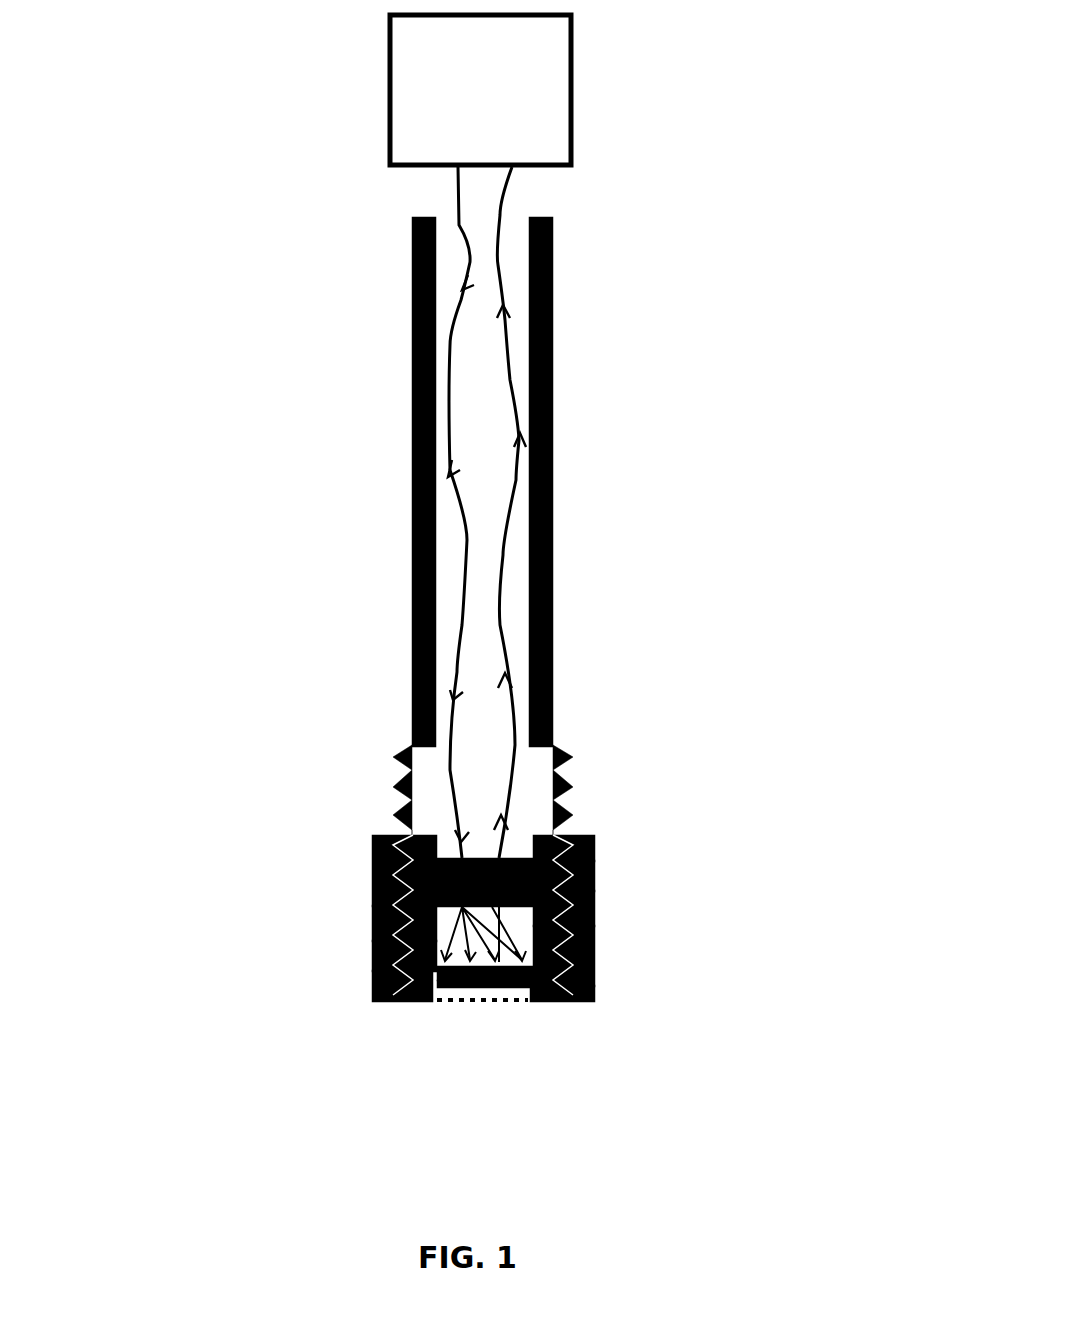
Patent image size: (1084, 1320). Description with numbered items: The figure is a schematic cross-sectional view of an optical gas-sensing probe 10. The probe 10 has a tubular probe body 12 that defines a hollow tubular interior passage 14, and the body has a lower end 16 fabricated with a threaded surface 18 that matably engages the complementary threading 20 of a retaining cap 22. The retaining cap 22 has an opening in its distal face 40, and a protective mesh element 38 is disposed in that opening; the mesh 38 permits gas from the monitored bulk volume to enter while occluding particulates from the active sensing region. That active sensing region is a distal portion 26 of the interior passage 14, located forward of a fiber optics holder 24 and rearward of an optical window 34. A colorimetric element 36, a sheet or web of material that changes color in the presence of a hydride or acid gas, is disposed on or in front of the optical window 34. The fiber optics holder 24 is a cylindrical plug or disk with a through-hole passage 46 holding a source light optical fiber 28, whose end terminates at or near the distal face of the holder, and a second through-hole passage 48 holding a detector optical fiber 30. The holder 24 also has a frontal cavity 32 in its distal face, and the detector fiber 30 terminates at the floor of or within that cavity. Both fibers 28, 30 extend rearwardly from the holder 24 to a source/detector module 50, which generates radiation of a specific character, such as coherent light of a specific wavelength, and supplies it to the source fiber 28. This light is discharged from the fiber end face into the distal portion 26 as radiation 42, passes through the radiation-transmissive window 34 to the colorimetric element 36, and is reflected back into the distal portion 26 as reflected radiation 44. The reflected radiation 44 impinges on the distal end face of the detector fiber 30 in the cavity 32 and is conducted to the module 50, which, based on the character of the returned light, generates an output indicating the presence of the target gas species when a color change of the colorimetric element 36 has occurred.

The optical gas-sensing probe 10 is at (633, 280).
The tubular probe body 12 is at (553, 477).
The hollow tubular interior passage 14 is at (448, 267).
The lower end 16 is at (590, 760).
The threaded surface 18 is at (407, 763).
The complementary threading 20 is at (593, 892).
The retaining cap 22 is at (437, 915).
The fiber optics holder 24 is at (572, 833).
The distal portion 26 is at (373, 957).
The source light optical fiber 28 is at (462, 628).
The detector optical fiber 30 is at (503, 575).
The frontal cavity 32 is at (593, 873).
The optical window 34 is at (590, 1002).
The colorimetric element 36 is at (466, 984).
The protective mesh element 38 is at (493, 1002).
The distal face 40 is at (557, 1002).
The radiation 42 is at (373, 977).
The reflected radiation 44 is at (593, 933).
The through-hole passage 46 is at (373, 870).
The second through-hole passage 48 is at (593, 840).
The source/detector module 50 is at (573, 88).